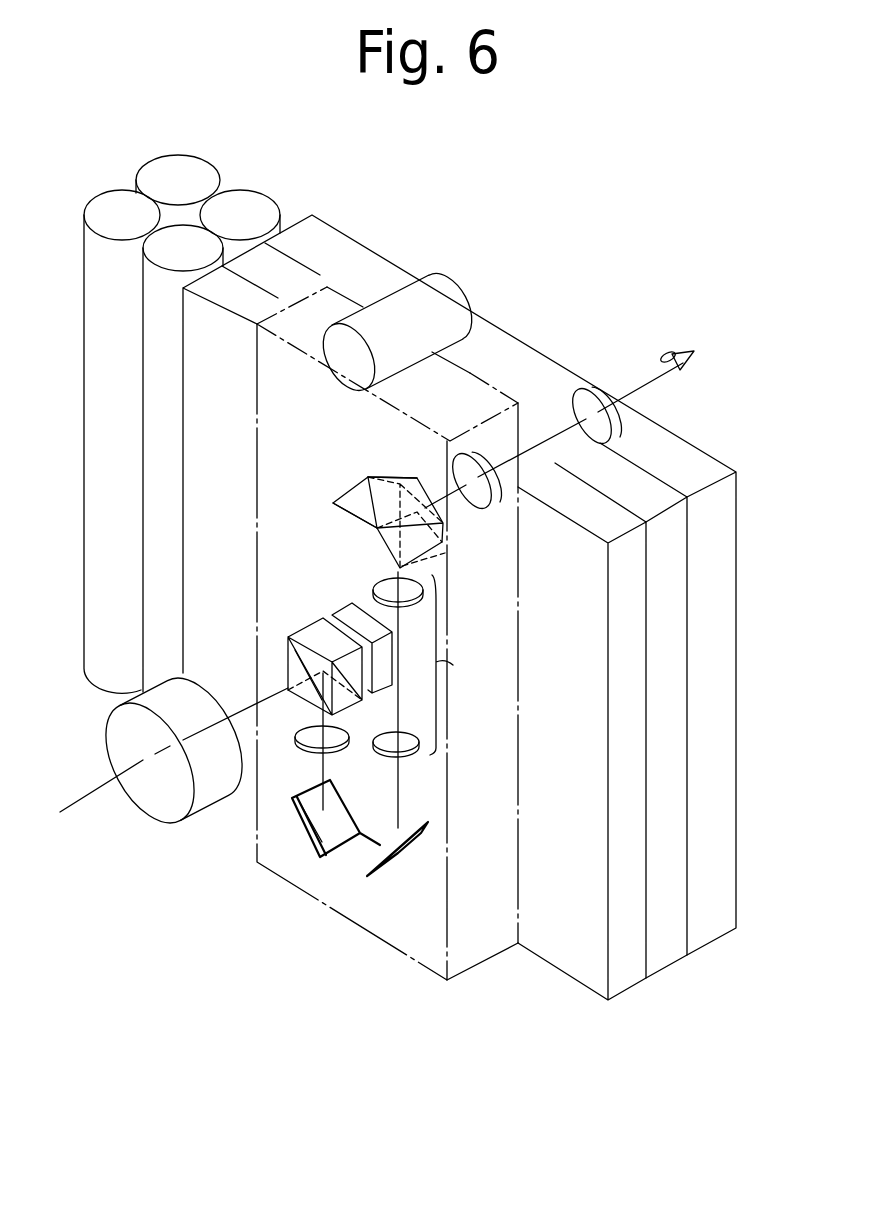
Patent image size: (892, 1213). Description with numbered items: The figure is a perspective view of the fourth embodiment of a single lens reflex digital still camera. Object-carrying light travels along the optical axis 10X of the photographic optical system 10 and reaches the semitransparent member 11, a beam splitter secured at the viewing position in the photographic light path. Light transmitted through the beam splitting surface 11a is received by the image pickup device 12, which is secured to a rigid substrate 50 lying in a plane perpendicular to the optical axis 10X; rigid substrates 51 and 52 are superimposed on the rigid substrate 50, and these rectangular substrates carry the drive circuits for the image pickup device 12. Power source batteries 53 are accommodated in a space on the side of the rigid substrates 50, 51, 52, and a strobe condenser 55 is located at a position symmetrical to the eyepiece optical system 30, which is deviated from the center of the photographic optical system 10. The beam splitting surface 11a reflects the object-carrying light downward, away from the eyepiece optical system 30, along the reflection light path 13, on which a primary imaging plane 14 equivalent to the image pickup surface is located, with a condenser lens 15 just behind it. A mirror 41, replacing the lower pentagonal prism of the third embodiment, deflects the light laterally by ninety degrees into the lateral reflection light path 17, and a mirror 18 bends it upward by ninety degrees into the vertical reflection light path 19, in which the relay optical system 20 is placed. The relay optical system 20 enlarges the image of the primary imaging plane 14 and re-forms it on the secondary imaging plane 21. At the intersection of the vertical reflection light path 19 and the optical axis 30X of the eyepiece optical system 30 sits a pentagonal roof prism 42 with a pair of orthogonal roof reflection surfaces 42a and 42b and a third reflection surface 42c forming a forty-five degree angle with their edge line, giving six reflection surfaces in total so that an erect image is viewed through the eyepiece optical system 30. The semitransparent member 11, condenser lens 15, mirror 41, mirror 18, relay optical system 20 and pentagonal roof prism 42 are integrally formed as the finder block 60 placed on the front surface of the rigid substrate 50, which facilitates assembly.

The photographic optical system 10 is at (160, 807).
The optical axis of the photographic optical system 10X is at (85, 802).
The semitransparent member 11 is at (312, 633).
The beam splitting surface 11a is at (305, 662).
The image pickup device 12 is at (340, 608).
The reflection light path 13 is at (323, 770).
The primary imaging plane 14 is at (357, 713).
The condenser lens 15 is at (303, 746).
The lateral reflection light path 17 is at (372, 842).
The mirror 18 is at (407, 845).
The vertical reflection light path 19 is at (400, 790).
The relay optical system 20 is at (456, 665).
The secondary imaging plane 21 is at (375, 548).
The eyepiece optical system 30 is at (610, 443).
The optical axis of the eyepiece optical system 30X is at (474, 508).
The mirror 41 is at (313, 820).
The pentagonal roof prism 42 is at (347, 493).
The roof reflection surface 42a is at (432, 577).
The roof reflection surface 42b is at (378, 477).
The third reflection surface 42c is at (353, 530).
The rigid substrate 50 is at (628, 992).
The rigid substrate 51 is at (663, 960).
The rigid substrate 52 is at (705, 937).
The power source batteries 53 is at (233, 205).
The strobe condenser 55 is at (437, 272).
The finder block 60 is at (468, 963).